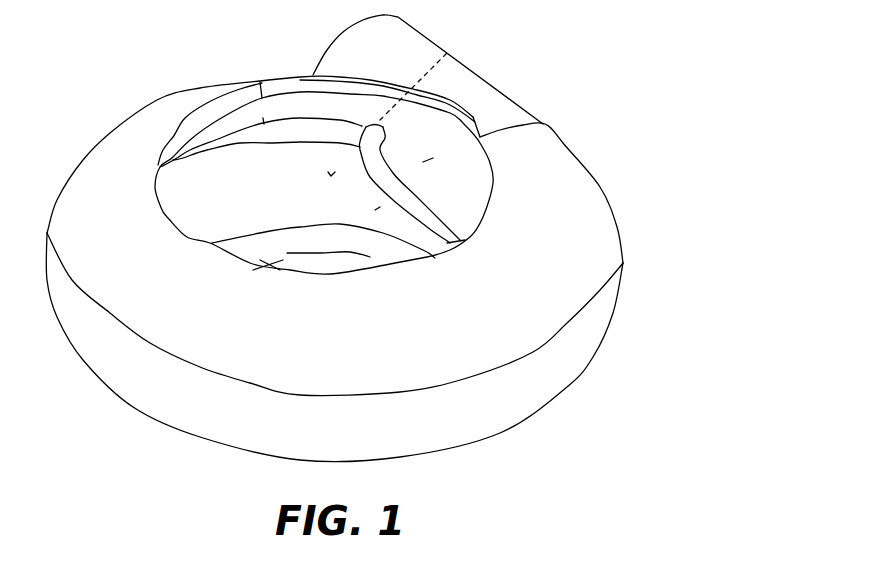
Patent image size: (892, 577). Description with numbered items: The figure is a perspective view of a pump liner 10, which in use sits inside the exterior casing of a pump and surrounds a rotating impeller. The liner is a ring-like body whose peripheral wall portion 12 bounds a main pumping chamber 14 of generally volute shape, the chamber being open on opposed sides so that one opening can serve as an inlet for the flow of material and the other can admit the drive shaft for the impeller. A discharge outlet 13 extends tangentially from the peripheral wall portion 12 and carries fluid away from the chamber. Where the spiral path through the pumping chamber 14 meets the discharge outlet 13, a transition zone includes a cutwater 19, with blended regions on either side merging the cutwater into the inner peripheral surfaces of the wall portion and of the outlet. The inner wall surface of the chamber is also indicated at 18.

The pump liner 10 is at (345, 286).
The peripheral wall portion 12 is at (578, 343).
The discharge outlet 13 is at (477, 72).
The main pumping chamber 14 is at (200, 190).
The inner wall 18 is at (460, 192).
The cutwater 19 is at (360, 148).